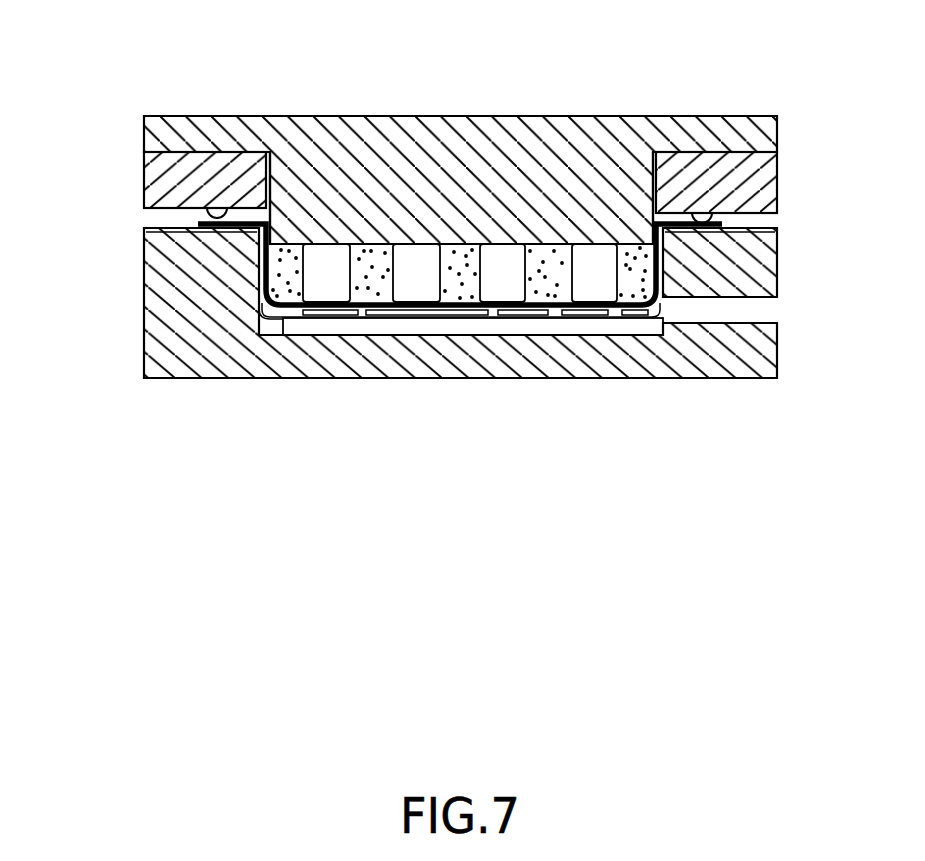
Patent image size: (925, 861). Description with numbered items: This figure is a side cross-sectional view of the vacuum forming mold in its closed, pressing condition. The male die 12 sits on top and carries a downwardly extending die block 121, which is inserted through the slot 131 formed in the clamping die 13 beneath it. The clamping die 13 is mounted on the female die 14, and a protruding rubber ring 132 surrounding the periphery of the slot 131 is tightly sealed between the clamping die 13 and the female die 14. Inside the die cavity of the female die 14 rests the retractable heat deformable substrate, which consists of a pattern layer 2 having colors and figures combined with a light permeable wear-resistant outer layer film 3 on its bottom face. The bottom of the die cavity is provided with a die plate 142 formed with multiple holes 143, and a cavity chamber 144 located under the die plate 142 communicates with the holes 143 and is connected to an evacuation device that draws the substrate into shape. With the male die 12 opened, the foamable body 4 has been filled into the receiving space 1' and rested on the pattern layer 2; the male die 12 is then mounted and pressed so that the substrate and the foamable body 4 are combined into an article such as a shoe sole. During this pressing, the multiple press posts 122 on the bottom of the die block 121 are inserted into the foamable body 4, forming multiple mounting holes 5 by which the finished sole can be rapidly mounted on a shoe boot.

The male die 12 is at (400, 118).
The slot 131 is at (268, 178).
The clamping die 13 is at (146, 174).
The die block 121 is at (620, 187).
The rubber ring 132 is at (210, 213).
The female die 14 is at (718, 379).
The press posts 122 is at (618, 248).
The receiving space 1' is at (460, 346).
The die plate 142 is at (287, 318).
The outer layer film 3 is at (266, 293).
The holes 143 is at (429, 316).
The cavity chamber 144 is at (542, 330).
The foamable body 4 is at (466, 294).
The pattern layer 2 is at (282, 268).
The mounting holes 5 is at (352, 280).